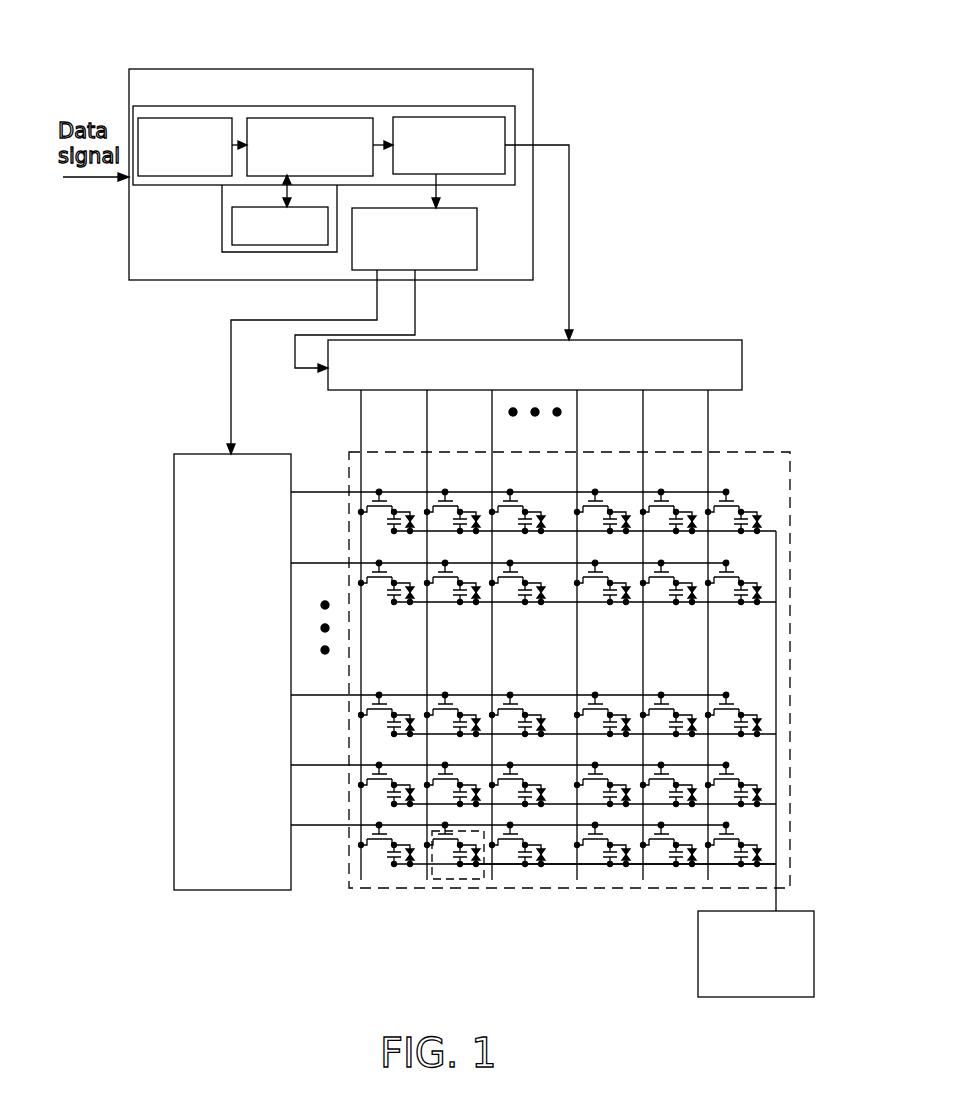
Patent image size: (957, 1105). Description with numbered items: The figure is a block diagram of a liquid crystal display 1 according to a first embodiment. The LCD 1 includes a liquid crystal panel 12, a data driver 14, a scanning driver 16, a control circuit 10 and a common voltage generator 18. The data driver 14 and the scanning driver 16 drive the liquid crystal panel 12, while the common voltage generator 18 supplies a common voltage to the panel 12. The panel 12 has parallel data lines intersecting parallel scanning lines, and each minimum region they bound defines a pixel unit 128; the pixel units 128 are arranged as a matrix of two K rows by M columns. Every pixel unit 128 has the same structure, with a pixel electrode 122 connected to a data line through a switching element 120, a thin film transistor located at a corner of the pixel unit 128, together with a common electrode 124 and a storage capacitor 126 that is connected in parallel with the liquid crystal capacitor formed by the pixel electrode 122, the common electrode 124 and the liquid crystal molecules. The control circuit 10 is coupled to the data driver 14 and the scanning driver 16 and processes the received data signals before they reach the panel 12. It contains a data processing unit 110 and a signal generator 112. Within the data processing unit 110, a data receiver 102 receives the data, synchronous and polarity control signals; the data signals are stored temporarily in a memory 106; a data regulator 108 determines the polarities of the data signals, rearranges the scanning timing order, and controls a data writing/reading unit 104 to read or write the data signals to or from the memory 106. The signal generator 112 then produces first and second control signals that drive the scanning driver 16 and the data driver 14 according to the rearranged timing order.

The liquid crystal display 1 is at (611, 36).
The control circuit 10 is at (197, 282).
The data receiver 102 is at (180, 177).
The data writing/reading (W/R) unit 104 is at (316, 118).
The memory 106 is at (288, 245).
The data regulator 108 is at (505, 135).
The data processing unit 110 is at (383, 106).
The signal generator 112 is at (477, 253).
The liquid crystal panel 12 is at (540, 681).
The data driver 14 is at (683, 340).
The scanning driver 16 is at (174, 517).
The common voltage generator 18 is at (770, 997).
The switching element 120 is at (483, 897).
The pixel electrode 122 is at (450, 847).
The common electrode 124 is at (464, 862).
The storage capacitor 126 is at (488, 855).
The pixel unit 128 is at (485, 873).